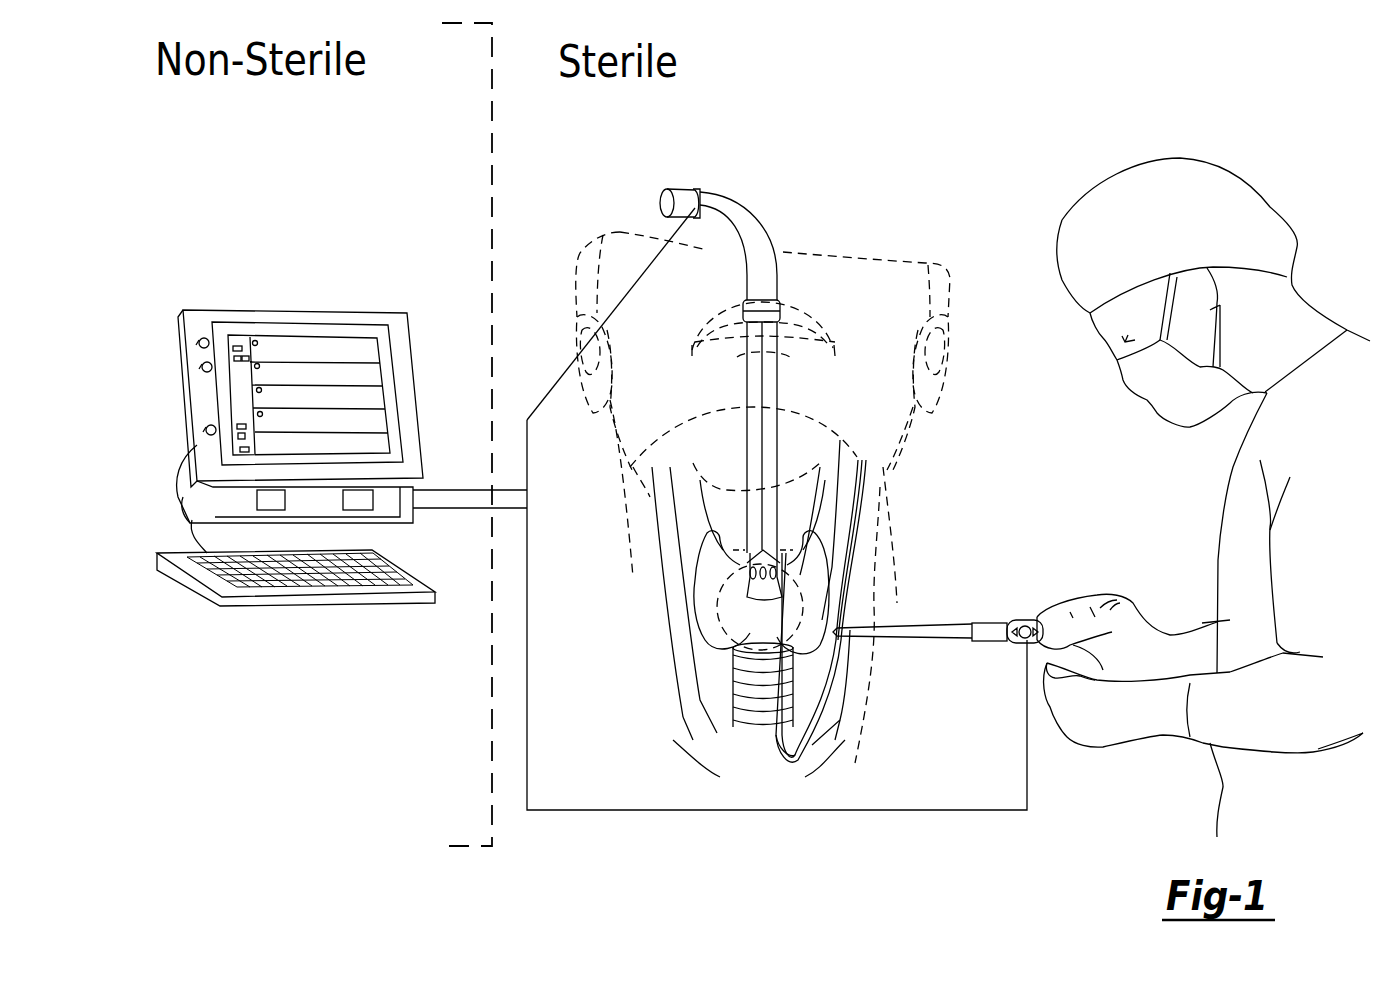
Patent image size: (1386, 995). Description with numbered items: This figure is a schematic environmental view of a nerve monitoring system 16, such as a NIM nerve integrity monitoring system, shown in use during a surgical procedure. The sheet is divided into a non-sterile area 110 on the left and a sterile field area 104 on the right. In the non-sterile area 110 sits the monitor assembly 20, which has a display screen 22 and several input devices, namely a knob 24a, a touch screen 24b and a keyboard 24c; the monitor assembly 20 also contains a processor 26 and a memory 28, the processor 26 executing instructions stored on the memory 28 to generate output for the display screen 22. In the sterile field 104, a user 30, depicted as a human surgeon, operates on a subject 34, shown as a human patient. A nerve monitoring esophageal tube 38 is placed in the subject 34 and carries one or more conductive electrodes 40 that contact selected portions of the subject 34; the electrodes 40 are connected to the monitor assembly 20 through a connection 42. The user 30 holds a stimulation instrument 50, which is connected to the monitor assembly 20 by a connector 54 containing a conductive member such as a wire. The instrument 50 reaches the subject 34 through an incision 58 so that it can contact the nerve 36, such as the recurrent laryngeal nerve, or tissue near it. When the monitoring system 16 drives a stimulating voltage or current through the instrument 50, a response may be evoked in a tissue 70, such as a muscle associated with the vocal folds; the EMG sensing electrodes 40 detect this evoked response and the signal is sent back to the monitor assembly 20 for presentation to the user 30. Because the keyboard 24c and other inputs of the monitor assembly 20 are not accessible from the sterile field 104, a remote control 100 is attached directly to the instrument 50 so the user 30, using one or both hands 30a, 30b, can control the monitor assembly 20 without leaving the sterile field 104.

The monitoring system 16 is at (470, 182).
The monitor assembly 20 is at (331, 429).
The display screen 22 is at (290, 347).
The knob 24a is at (200, 338).
The touch screen 24b is at (240, 397).
The keyboard 24c is at (315, 603).
The processor 26 is at (263, 505).
The memory 28 is at (360, 500).
The user 30 is at (1203, 497).
The hand 30a is at (1140, 610).
The hand 30b is at (1100, 740).
The subject 34 is at (878, 262).
The nerve 36 is at (850, 553).
The nerve monitoring esophageal tube 38 is at (678, 190).
The electrode 40 is at (753, 573).
The connection 42 is at (615, 313).
The stimulation instrument 50 is at (927, 633).
The connector 54 is at (1027, 800).
The incision 58 is at (824, 765).
The tissue 70 is at (707, 620).
The remote control 100 is at (1017, 617).
The sterile field area 104 is at (675, 48).
The non-sterile area 110 is at (310, 37).